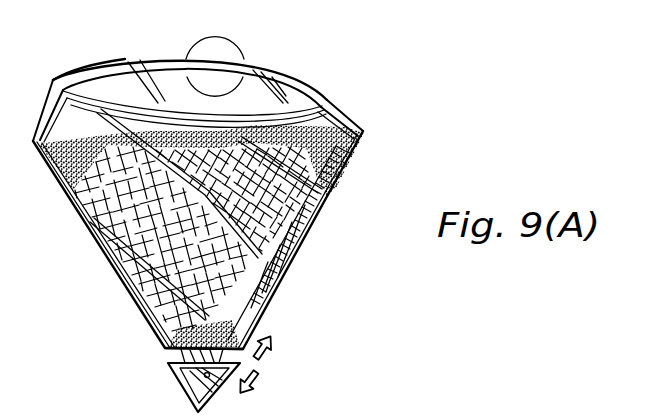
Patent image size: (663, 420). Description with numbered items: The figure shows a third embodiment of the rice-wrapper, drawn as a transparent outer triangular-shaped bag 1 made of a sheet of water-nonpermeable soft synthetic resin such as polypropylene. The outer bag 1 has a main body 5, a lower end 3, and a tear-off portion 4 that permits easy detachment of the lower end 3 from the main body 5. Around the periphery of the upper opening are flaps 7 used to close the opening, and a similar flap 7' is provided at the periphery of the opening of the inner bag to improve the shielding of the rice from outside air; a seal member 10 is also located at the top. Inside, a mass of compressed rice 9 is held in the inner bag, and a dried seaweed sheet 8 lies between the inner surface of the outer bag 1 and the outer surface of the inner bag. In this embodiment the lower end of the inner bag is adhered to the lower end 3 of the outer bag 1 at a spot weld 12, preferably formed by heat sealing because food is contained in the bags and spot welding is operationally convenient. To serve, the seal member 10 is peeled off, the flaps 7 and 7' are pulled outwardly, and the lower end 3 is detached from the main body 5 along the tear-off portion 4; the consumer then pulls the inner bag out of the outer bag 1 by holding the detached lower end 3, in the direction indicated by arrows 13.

The outer bag 1 is at (330, 172).
The lower end 3 is at (207, 395).
The tear-off portion 4 is at (172, 362).
The main body 5 is at (307, 232).
The flap 7 is at (190, 77).
The flap 7' is at (89, 67).
The dried seaweed sheet 8 is at (122, 265).
The mass of compressed rice 9 is at (320, 195).
The seal member 10 is at (200, 48).
The spot weld 12 is at (206, 377).
The direction arrows 13 is at (273, 376).